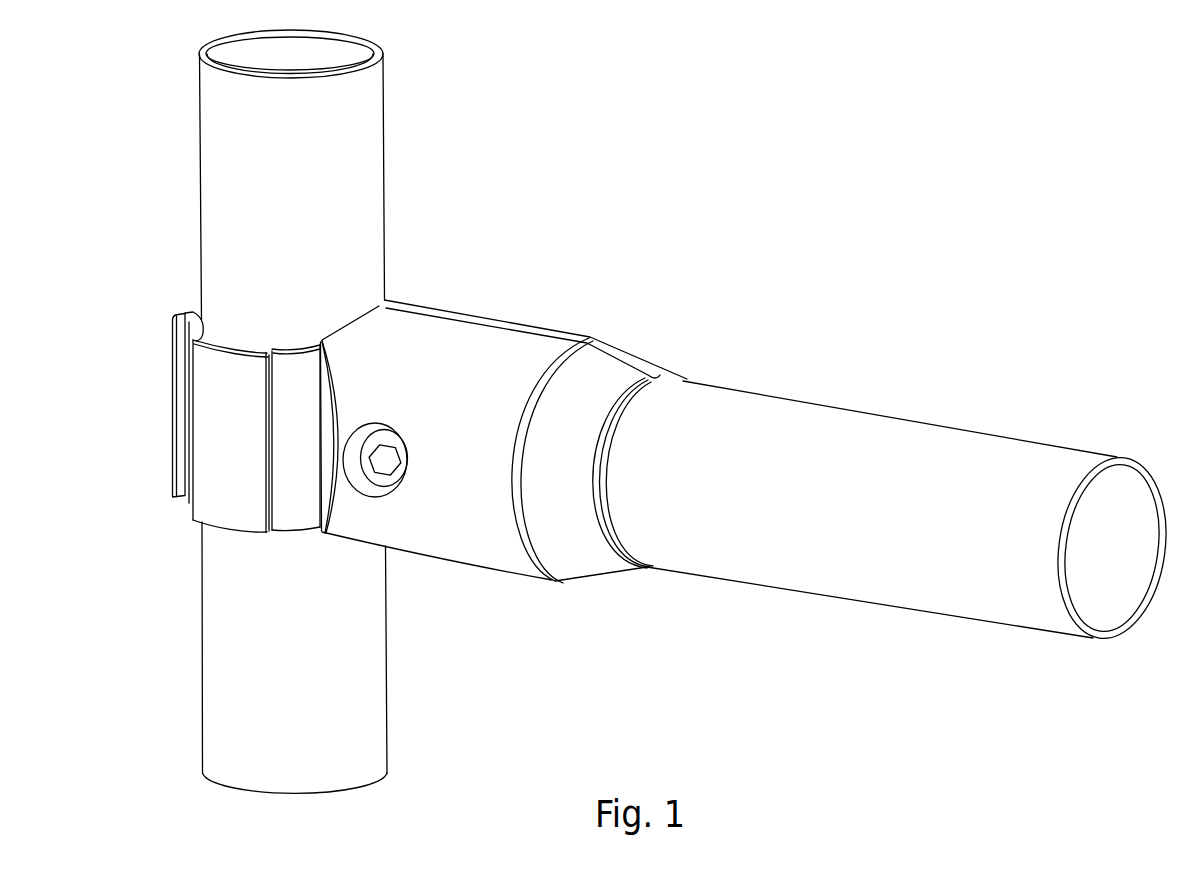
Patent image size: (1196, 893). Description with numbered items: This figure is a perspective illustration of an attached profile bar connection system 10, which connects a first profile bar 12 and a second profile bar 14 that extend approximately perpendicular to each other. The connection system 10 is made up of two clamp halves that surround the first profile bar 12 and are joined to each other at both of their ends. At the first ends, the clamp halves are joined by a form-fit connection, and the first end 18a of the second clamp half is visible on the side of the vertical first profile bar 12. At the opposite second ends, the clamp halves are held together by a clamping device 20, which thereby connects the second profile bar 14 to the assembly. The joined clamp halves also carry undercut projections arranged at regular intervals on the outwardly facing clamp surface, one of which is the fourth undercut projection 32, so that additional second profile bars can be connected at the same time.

The profile bar connection system 10 is at (515, 287).
The first profile bar 12 is at (342, 128).
The second profile bar 14 is at (872, 465).
The first end of second clamp half 18a is at (185, 310).
The clamping device 20 is at (583, 388).
The fourth undercut projection 32 is at (228, 477).